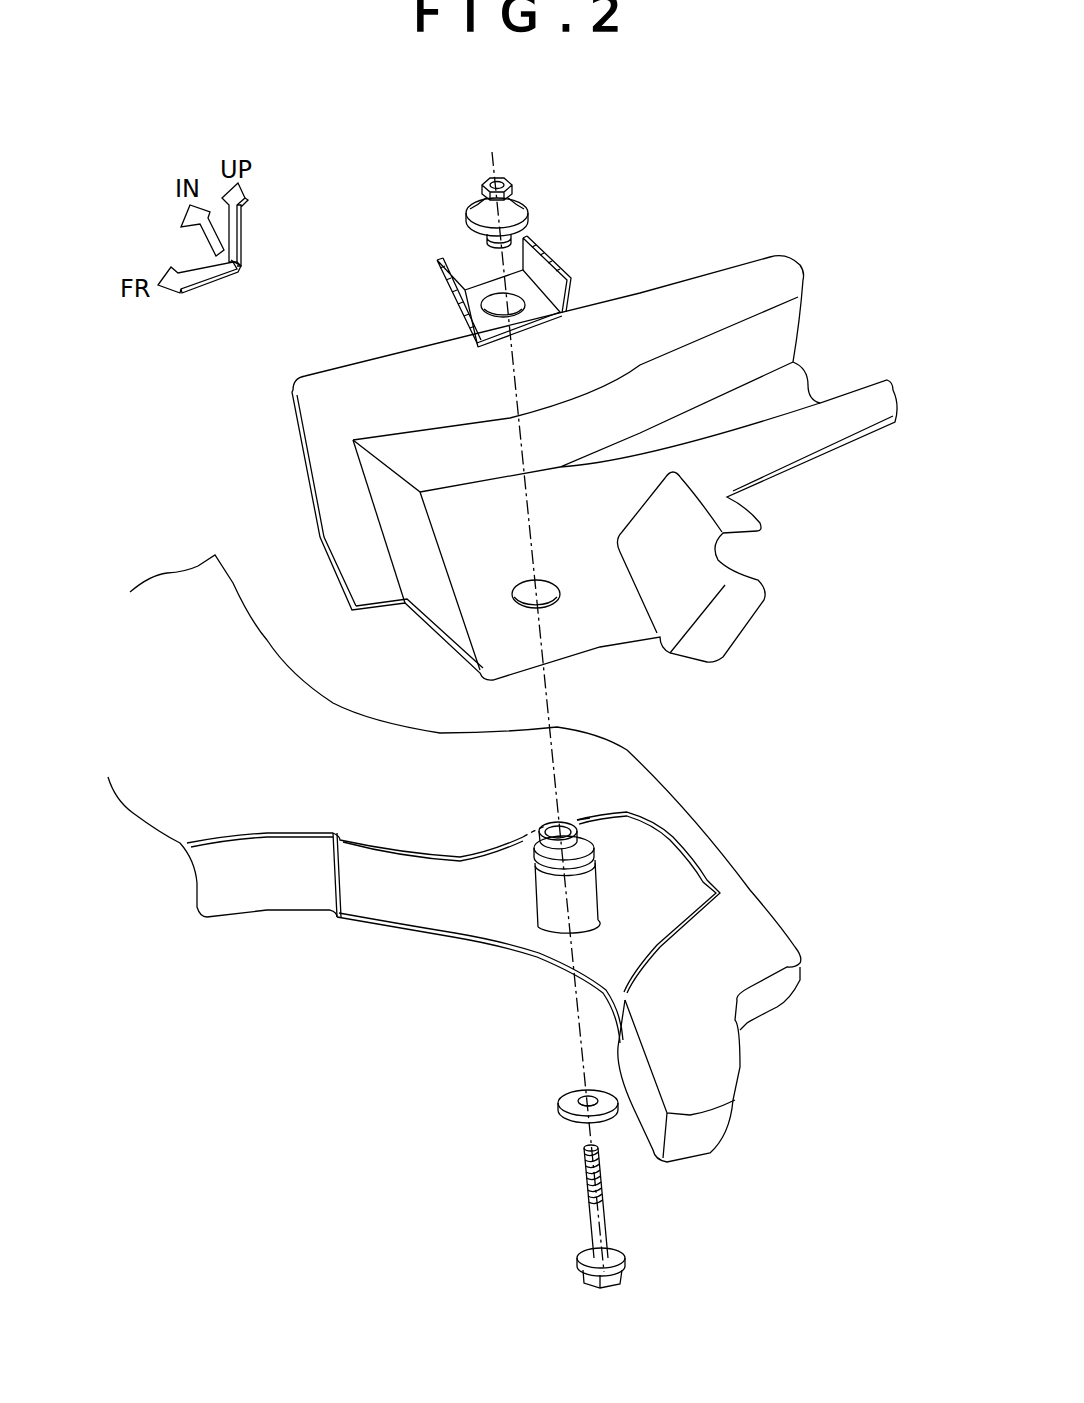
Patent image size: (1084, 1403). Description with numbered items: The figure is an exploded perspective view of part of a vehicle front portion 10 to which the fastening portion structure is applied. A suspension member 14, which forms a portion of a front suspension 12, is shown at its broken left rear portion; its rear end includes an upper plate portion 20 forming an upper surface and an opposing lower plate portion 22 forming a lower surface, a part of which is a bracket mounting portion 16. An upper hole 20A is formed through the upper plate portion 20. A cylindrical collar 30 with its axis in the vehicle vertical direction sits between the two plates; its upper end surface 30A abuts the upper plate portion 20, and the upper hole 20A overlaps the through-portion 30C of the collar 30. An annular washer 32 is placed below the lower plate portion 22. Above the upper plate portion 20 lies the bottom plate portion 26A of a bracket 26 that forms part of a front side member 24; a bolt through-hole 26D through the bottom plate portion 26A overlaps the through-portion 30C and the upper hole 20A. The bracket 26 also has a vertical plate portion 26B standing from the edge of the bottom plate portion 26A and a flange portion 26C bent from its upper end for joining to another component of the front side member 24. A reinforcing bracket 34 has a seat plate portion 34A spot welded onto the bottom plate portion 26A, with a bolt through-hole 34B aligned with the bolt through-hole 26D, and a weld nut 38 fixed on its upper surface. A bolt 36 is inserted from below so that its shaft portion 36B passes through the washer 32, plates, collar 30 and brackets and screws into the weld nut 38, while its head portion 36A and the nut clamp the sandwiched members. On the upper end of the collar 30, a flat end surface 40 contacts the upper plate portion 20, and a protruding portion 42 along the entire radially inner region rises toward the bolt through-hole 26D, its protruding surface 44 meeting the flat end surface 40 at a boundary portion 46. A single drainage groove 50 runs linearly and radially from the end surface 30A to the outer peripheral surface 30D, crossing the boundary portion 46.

The vehicle front portion 10 is at (671, 198).
The front suspension 12 is at (210, 466).
The suspension member 14 is at (245, 546).
The bracket mounting portion 16 is at (594, 777).
The upper plate portion 20 is at (623, 774).
The upper hole 20A is at (537, 827).
The lower plate portion 22 is at (648, 885).
The front side member 24 is at (719, 221).
The bracket 26 is at (744, 241).
The bottom plate portion 26A is at (613, 483).
The vertical plate portion 26B is at (423, 565).
The flange portion 26C is at (360, 533).
The bolt through-hole 26D is at (544, 580).
The collar 30 is at (623, 927).
The end surface 30A is at (527, 851).
The through-portion 30C is at (563, 817).
The outer peripheral surface 30D is at (538, 889).
The washer 32 is at (563, 1099).
The reinforcing bracket 34 is at (581, 262).
The seat plate portion 34A is at (477, 293).
The bolt through-hole 34B is at (527, 303).
The bolt 36 is at (666, 1243).
The head portion 36A is at (612, 1284).
The shaft portion 36B is at (602, 1168).
The weld nut 38 is at (533, 183).
The flat end surface 40 is at (587, 867).
The protruding portion 42 is at (550, 893).
The protruding surface 44 is at (587, 893).
The boundary portion 46 is at (590, 842).
The drainage groove 50 is at (590, 820).